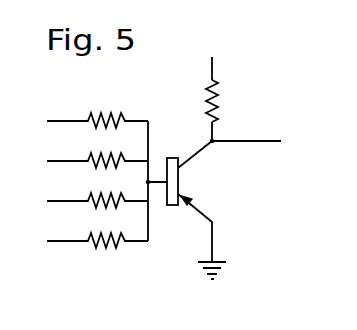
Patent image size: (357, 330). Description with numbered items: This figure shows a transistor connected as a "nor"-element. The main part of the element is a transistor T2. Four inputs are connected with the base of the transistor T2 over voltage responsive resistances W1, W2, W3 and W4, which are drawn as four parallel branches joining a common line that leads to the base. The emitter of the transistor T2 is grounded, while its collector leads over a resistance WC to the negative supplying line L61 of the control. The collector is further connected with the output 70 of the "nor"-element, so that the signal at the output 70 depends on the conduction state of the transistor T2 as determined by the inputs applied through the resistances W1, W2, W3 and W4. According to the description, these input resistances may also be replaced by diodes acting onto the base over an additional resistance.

The voltage responsive resistance W1 is at (90, 116).
The voltage responsive resistance W2 is at (90, 156).
The voltage responsive resistance W3 is at (90, 196).
The voltage responsive resistance W4 is at (90, 236).
The resistance WC is at (215, 107).
The negative supplying line L61 is at (212, 62).
The transistor T2 is at (179, 182).
The output 70 is at (286, 138).